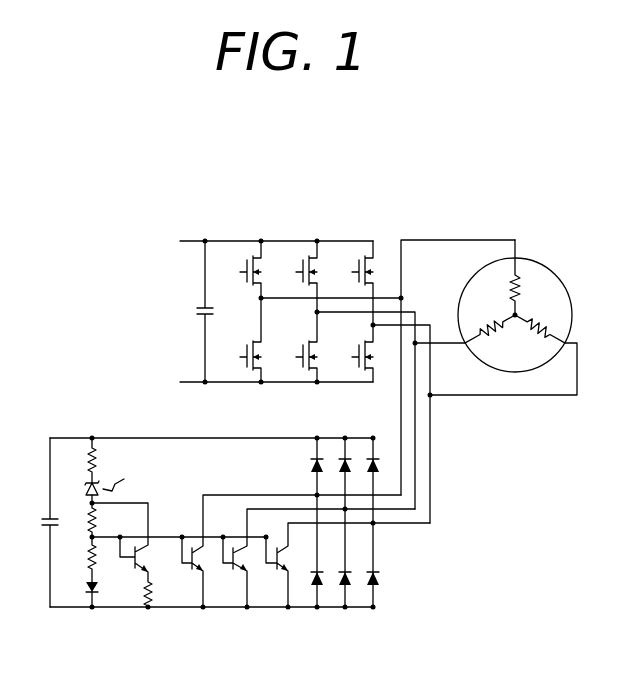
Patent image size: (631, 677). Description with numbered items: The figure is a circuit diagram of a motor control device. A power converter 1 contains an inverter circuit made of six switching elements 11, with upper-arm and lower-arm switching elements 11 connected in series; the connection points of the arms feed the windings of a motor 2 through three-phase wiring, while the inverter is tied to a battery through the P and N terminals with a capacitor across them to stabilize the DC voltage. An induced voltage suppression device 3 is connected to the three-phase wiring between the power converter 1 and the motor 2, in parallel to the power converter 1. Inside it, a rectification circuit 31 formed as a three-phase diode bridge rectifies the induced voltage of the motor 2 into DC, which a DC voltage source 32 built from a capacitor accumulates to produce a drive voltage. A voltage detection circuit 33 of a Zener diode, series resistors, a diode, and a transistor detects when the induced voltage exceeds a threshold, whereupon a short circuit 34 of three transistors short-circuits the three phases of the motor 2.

The power converter 1 is at (188, 173).
The motor 2 is at (538, 261).
The induced voltage suppression device 3 is at (440, 437).
The switching element 11 is at (247, 256).
The rectification circuit 31 is at (378, 613).
The DC voltage source 32 is at (22, 613).
The voltage detection circuit 33 is at (73, 613).
The short circuit 34 is at (180, 613).